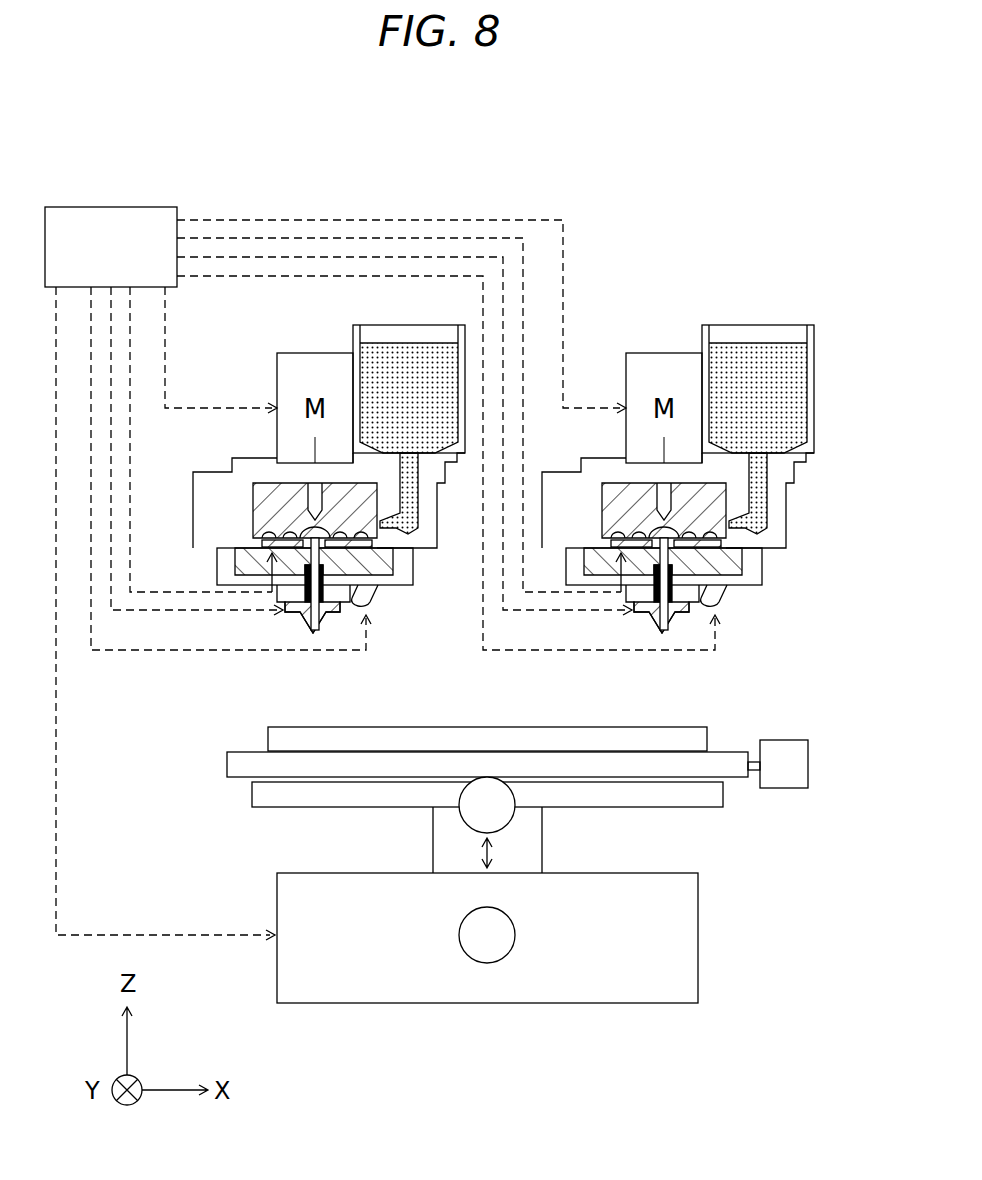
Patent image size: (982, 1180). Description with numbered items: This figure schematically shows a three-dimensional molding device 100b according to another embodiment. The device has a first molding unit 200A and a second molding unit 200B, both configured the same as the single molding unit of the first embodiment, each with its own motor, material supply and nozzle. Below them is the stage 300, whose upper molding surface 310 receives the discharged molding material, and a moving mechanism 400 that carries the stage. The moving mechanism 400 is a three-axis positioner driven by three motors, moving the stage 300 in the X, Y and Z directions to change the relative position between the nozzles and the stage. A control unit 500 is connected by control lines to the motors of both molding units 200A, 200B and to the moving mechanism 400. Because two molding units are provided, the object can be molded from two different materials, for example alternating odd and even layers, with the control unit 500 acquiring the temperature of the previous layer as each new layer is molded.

The three-dimensional molding device 100b is at (150, 109).
The control unit 500 is at (120, 207).
The first molding unit 200A is at (325, 335).
The second molding unit 200B is at (689, 335).
The stage 300 is at (746, 677).
The molding surface 310 is at (628, 727).
The moving mechanism 400 is at (745, 845).